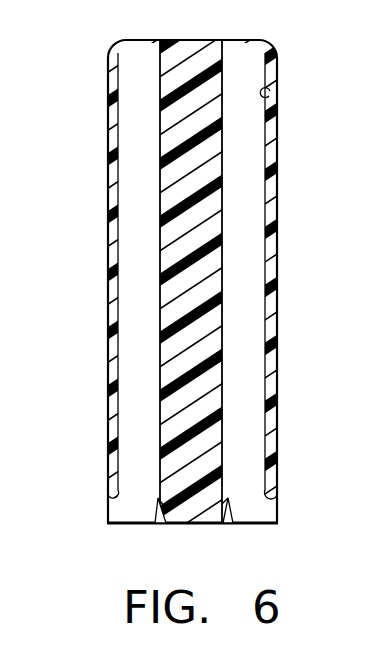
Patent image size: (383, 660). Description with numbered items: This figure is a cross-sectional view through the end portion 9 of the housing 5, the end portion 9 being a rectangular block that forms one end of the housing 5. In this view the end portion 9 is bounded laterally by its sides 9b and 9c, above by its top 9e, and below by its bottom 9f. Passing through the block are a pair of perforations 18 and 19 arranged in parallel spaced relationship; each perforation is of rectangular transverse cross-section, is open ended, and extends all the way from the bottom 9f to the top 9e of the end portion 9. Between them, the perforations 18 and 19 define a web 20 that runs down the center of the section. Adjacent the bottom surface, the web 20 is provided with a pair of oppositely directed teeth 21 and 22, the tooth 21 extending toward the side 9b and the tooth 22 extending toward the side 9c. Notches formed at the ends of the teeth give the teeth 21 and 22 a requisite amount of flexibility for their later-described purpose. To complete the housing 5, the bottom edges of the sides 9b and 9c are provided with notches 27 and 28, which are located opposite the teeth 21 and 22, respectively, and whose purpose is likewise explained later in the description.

The housing 5 is at (278, 256).
The end portion 9 is at (277, 158).
The side 9b is at (108, 364).
The side 9c is at (277, 334).
The top 9e is at (192, 40).
The bottom 9f is at (187, 524).
The perforation 18 is at (147, 83).
The perforation 19 is at (270, 93).
The web 20 is at (213, 252).
The tooth 21 is at (160, 511).
The tooth 22 is at (231, 511).
The notch 27 is at (113, 510).
The notch 28 is at (278, 506).